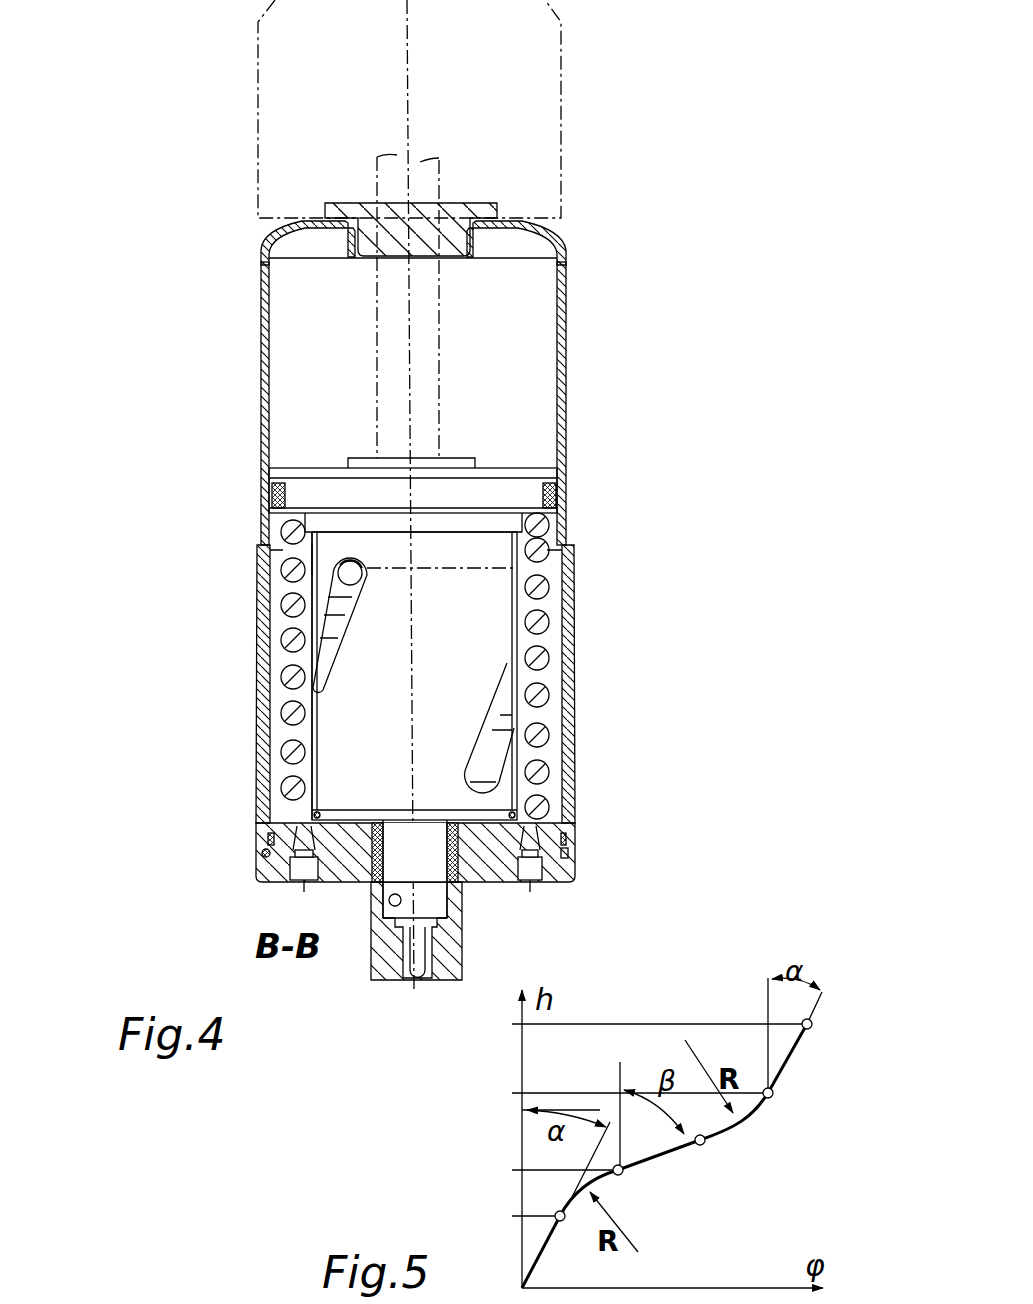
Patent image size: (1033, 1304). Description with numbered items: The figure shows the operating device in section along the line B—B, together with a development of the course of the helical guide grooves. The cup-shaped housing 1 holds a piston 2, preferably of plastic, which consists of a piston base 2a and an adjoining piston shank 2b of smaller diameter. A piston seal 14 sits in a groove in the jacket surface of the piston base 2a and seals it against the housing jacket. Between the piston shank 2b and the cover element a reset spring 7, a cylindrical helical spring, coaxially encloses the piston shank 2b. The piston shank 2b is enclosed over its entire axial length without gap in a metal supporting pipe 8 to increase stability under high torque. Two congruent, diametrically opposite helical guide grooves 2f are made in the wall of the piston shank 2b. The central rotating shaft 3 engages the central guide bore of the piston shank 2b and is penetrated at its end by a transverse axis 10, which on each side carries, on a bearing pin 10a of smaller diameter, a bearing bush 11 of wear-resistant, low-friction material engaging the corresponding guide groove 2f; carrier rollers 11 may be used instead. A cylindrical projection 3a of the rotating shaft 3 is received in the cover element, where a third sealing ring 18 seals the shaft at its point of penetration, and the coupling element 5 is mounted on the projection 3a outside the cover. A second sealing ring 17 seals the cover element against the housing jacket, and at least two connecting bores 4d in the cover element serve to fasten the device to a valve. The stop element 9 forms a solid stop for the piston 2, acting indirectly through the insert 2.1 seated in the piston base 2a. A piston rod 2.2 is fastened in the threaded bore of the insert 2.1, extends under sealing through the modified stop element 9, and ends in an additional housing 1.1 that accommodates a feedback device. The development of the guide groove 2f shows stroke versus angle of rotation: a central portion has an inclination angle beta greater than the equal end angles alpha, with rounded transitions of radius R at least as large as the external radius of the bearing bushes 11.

In FIG. 4, the housing 1 is at (567, 417).
In FIG. 4, the additional housing 1.1 is at (561, 122).
In FIG. 4, the piston 2 is at (407, 666).
In FIG. 5, the piston 2 is at (515, 1123).
In FIG. 4, the piston base 2a is at (487, 497).
In FIG. 4, the piston shank 2b is at (350, 743).
In FIG. 4, the helical guide groove 2f is at (468, 752).
In FIG. 5, the helical guide groove 2f is at (660, 1158).
In FIG. 4, the insert 2.1 is at (455, 463).
In FIG. 4, the piston rod 2.2 is at (440, 307).
In FIG. 4, the rotating shaft 3 is at (485, 800).
In FIG. 5, the rotating shaft 3 is at (657, 1287).
In FIG. 4, the cylindrical projection 3a is at (517, 817).
In FIG. 4, the connecting bore 4d is at (265, 875).
In FIG. 4, the coupling element 5 is at (448, 942).
In FIG. 4, the reset spring 7 is at (537, 620).
In FIG. 4, the supporting pipe 8 is at (312, 775).
In FIG. 4, the stop element 9 is at (450, 240).
In FIG. 4, the transverse axis 10 is at (312, 578).
In FIG. 4, the bearing pin 10a is at (312, 568).
In FIG. 4, the bearing bush 11 is at (352, 575).
In FIG. 4, the piston seal 14 is at (276, 492).
In FIG. 4, the second sealing ring 17 is at (268, 838).
In FIG. 4, the third sealing ring 18 is at (565, 850).